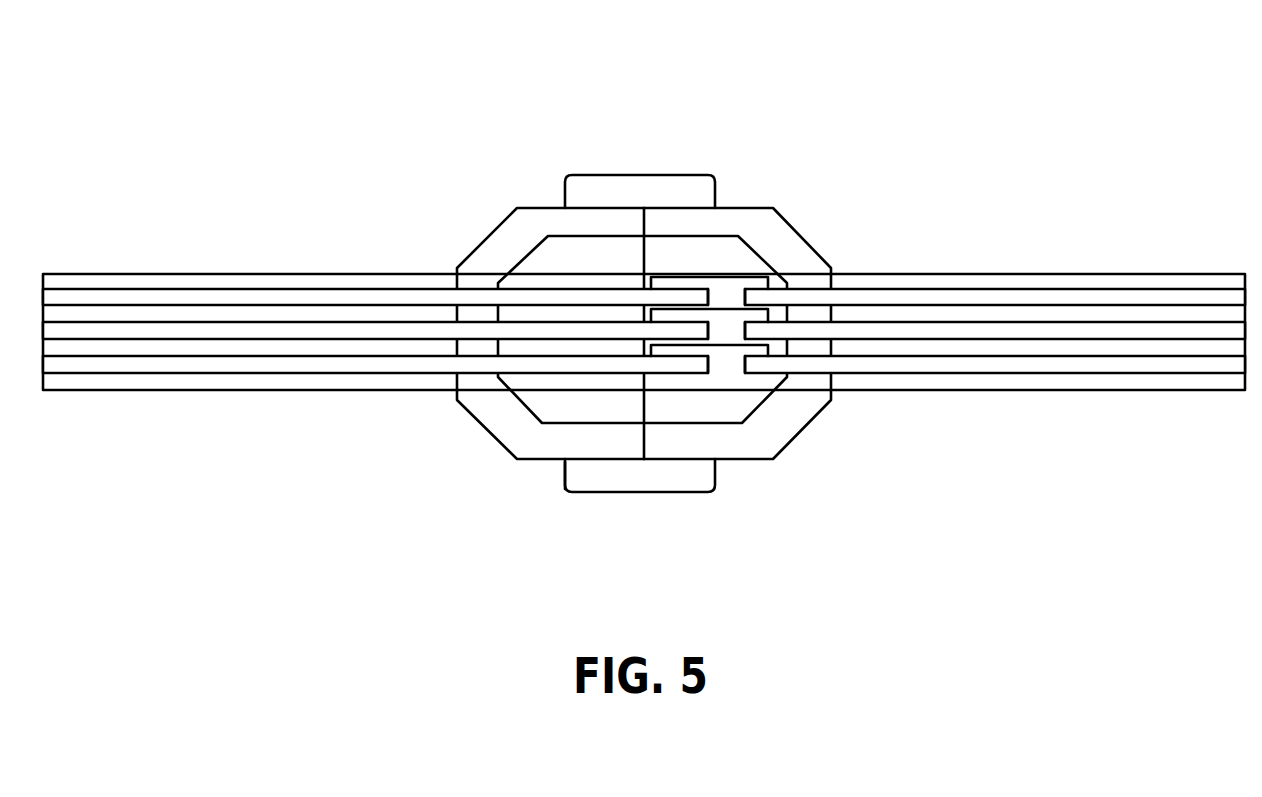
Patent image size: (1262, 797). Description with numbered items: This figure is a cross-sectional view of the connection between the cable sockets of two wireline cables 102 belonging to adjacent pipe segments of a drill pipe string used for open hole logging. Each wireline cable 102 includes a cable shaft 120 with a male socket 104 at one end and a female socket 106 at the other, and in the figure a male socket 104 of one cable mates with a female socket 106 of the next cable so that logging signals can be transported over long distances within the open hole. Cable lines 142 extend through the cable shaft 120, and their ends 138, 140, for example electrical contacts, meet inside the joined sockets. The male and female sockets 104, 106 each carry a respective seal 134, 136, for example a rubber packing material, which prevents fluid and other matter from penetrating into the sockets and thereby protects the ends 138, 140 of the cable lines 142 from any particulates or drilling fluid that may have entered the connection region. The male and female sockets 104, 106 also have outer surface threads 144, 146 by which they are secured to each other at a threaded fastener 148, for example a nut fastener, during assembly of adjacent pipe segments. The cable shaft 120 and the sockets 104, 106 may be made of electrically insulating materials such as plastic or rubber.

The wireline cable 102 is at (962, 165).
The male socket 104 is at (478, 408).
The female socket 106 is at (802, 418).
The cable shaft 120 is at (1093, 278).
The seal 134 is at (548, 255).
The seal 136 is at (731, 255).
The end 138 is at (587, 383).
The end 140 is at (728, 375).
The cable lines 142 is at (327, 275).
The outer surface threads 144 is at (585, 460).
The outer surface threads 146 is at (673, 458).
The threaded fastener 148 is at (668, 190).